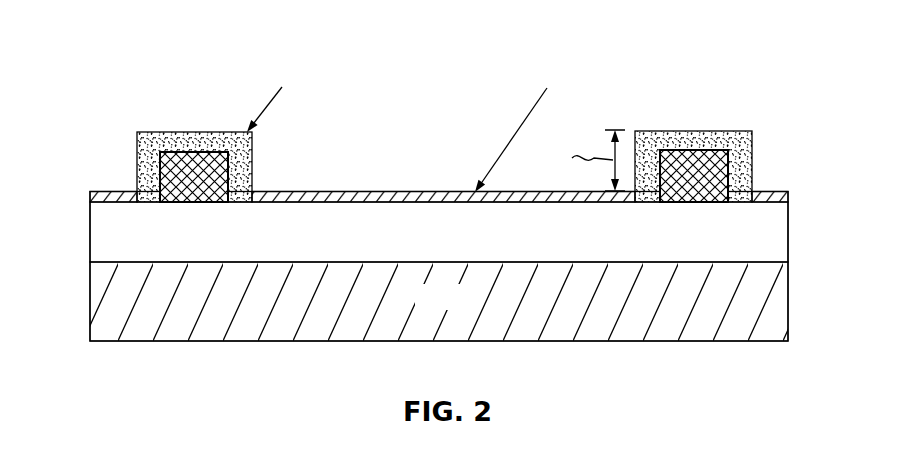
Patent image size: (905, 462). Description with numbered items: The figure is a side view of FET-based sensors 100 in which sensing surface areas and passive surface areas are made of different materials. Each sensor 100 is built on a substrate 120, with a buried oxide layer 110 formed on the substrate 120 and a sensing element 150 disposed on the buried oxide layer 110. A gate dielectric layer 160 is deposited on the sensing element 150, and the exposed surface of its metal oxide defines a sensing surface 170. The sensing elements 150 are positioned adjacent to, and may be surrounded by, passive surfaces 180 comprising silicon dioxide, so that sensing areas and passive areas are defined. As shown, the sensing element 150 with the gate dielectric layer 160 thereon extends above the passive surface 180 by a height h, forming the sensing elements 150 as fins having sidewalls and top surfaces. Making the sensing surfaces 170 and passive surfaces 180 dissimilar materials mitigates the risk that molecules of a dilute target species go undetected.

The sensor 100 is at (457, 42).
The buried oxide layer 110 is at (455, 243).
The substrate 120 is at (460, 308).
The sensing element 150 is at (182, 163).
The gate dielectric layer 160 is at (137, 155).
The sensing surface 170 is at (252, 170).
The passive surface 180 is at (382, 192).